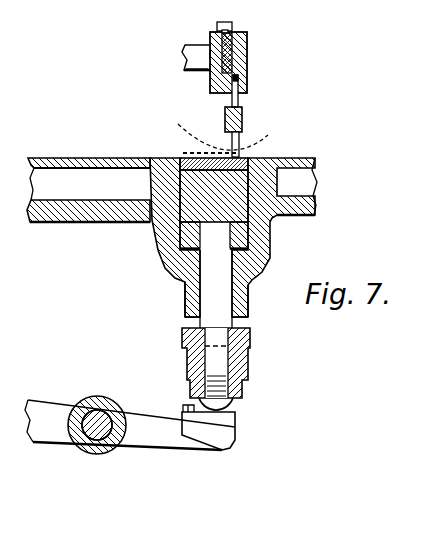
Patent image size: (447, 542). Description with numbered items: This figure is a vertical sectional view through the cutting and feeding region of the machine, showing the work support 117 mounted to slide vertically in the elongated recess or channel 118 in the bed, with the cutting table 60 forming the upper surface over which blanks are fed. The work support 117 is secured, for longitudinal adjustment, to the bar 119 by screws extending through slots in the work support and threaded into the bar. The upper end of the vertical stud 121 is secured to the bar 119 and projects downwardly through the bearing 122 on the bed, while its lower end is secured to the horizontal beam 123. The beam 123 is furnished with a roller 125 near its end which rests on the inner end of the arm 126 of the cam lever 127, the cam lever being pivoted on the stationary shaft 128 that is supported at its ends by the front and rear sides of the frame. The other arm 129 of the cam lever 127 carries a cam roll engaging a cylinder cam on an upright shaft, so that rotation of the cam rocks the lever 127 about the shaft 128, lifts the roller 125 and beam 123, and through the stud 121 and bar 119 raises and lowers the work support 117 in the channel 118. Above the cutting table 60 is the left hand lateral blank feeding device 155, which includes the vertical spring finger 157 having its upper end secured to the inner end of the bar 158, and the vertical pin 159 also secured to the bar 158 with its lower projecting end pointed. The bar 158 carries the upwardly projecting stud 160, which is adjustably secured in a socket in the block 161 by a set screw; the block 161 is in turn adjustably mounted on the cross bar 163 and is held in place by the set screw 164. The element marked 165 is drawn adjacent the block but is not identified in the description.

The cutting table 60 is at (57, 158).
The work support 117 is at (157, 156).
The elongated recess or channel 118 is at (255, 157).
The bar 119 is at (250, 240).
The vertical stud 121 is at (207, 292).
The bearing 122 is at (187, 303).
The horizontal beam 123 is at (252, 342).
The roller 125 is at (234, 403).
The arm 126 is at (232, 443).
The cam lever 127 is at (97, 455).
The stationary shaft 128 is at (97, 408).
The arm 129 is at (52, 442).
The left hand lateral blank feeding device 155 is at (193, 81).
The vertical spring finger 157 is at (250, 143).
The bar 158 is at (244, 112).
The vertical pin 159 is at (192, 133).
The stud 160 is at (247, 83).
The block 161 is at (247, 43).
The cross bar 163 is at (210, 53).
The set screw 164 is at (232, 15).
The plate 165 is at (184, 57).